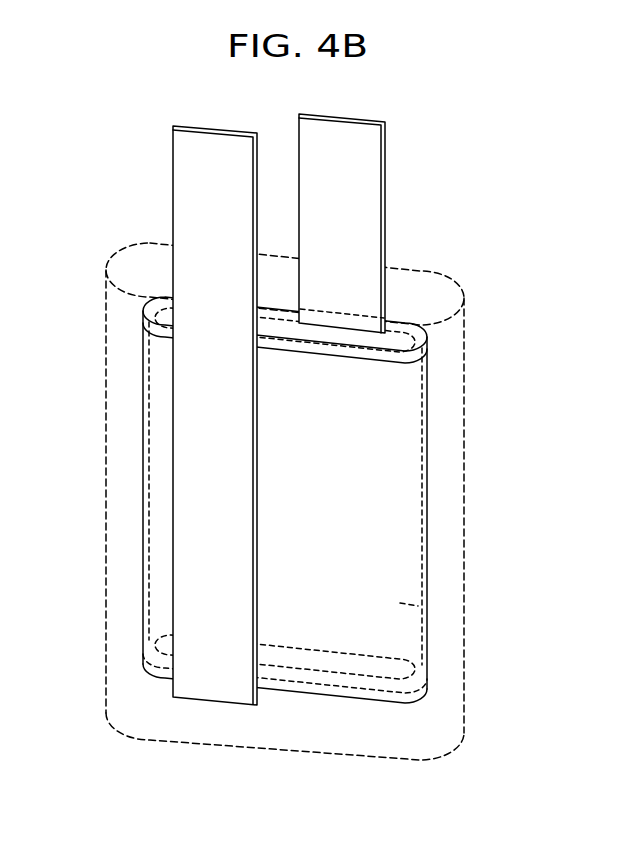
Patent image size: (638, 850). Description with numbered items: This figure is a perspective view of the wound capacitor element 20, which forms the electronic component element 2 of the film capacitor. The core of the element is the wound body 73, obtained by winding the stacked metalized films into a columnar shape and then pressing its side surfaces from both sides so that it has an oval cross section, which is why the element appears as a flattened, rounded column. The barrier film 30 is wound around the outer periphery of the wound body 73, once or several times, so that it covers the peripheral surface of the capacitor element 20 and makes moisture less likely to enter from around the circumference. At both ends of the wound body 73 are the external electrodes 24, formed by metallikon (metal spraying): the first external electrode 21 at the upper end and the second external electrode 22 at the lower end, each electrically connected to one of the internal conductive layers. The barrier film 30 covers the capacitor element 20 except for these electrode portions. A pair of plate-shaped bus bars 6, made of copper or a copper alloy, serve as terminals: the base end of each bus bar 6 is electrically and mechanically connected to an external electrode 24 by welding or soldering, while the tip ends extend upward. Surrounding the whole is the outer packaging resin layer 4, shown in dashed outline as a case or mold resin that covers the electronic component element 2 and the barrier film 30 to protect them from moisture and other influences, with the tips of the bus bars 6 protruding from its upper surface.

The outer packaging resin layer 4 is at (106, 487).
The electronic component element 2 is at (351, 526).
The capacitor element 20 is at (285, 500).
The bus bar 6 is at (185, 196).
The external electrodes 24 is at (285, 526).
The first external electrode 21 is at (285, 330).
The second external electrode 22 is at (285, 678).
The barrier film 30 is at (412, 533).
The wound body 73 is at (405, 608).